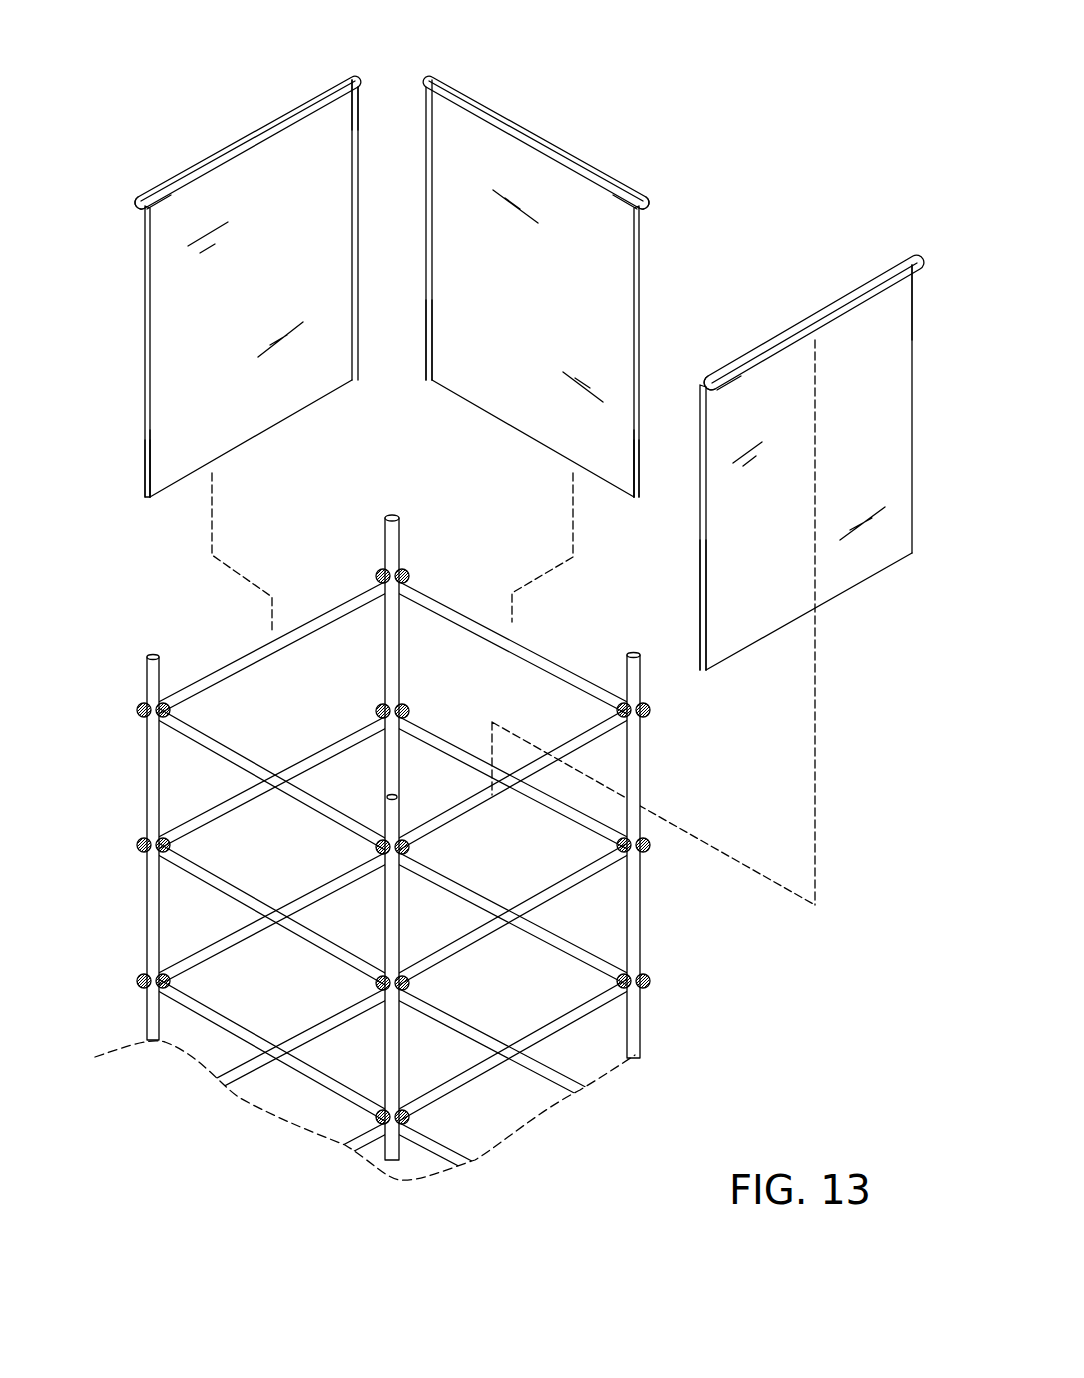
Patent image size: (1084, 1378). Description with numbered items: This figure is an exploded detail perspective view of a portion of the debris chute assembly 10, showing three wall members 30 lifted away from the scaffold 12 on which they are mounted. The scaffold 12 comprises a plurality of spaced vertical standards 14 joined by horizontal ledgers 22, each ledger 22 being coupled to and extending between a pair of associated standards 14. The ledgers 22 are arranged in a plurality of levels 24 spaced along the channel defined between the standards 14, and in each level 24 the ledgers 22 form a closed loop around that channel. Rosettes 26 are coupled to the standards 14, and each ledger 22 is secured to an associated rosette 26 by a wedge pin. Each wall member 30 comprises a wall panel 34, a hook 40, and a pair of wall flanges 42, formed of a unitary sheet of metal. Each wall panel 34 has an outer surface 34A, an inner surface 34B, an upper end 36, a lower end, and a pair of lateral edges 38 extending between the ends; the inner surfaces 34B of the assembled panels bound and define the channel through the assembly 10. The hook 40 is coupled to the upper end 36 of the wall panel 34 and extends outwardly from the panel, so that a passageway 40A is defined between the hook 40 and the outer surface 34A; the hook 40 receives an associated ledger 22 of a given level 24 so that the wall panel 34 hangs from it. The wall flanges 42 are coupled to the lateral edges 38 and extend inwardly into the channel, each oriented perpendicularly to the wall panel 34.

The debris chute assembly 10 is at (100, 140).
The scaffold 12 is at (122, 655).
The standard 14 is at (400, 543).
The ledger 22 is at (556, 670).
The level 24 is at (120, 706).
The rosette 26 is at (143, 711).
The wall member 30 is at (252, 108).
The wall panel 34 is at (190, 295).
The outer surface 34A is at (150, 436).
The inner surface 34B is at (247, 383).
The upper end 36 is at (183, 183).
The lateral edge 38 is at (146, 357).
The hook 40 is at (210, 158).
The passageway 40A is at (138, 208).
The wall flange 42 is at (150, 452).